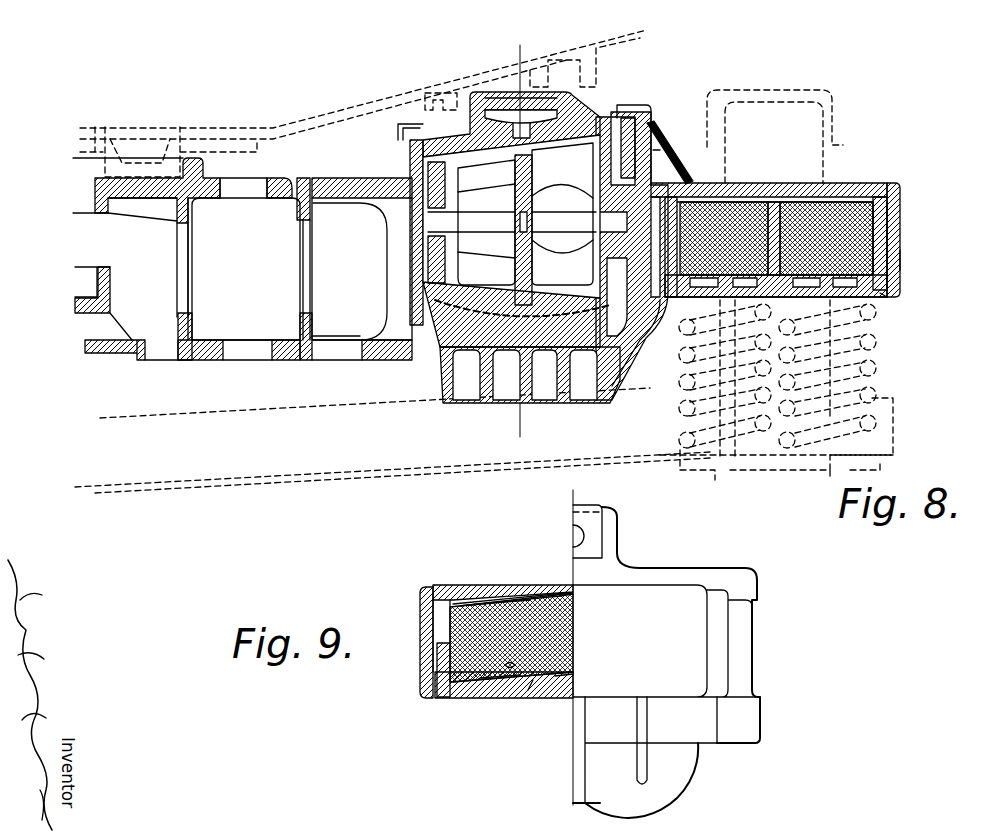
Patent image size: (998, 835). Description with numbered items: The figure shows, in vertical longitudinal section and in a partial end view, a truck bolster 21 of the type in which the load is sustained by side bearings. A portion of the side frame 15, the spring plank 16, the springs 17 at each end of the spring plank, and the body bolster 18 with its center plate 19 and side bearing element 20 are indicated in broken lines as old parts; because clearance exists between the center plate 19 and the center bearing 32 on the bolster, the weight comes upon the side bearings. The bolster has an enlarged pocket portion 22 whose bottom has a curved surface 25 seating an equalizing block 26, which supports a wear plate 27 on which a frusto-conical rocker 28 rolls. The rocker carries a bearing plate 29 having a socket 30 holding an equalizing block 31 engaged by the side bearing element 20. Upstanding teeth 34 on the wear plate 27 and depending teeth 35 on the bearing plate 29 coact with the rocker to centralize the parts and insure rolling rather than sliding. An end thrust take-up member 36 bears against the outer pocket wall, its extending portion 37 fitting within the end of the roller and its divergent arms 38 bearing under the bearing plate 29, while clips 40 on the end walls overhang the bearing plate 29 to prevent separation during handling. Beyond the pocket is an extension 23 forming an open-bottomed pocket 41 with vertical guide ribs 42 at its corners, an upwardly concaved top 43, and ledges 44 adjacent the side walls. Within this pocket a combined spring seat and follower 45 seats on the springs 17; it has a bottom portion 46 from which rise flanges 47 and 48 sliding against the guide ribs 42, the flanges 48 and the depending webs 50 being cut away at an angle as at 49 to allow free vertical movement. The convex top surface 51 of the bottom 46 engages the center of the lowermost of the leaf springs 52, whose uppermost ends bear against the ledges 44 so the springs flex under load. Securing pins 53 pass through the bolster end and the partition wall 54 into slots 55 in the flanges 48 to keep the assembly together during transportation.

In FIG. 8, the side frame 15 is at (830, 88).
In FIG. 8, the spring plank 16 is at (265, 490).
In FIG. 8, the springs 17 is at (890, 368).
In FIG. 8, the body bolster 18 is at (331, 127).
In FIG. 8, the center plate 19 is at (140, 150).
In FIG. 8, the side bearing element 20 is at (540, 65).
In FIG. 8, the bolster 21 is at (278, 198).
In FIG. 9, the bolster 21 is at (693, 767).
In FIG. 8, the pocket portion 22 is at (388, 310).
In FIG. 8, the extension 23 is at (885, 183).
In FIG. 9, the extension 23 is at (666, 624).
In FIG. 8, the curved surface 25 is at (521, 342).
In FIG. 8, the equalizing block 26 is at (560, 300).
In FIG. 8, the wear plate 27 is at (478, 290).
In FIG. 8, the frusto-conical rocker 28 is at (565, 163).
In FIG. 8, the bearing plate 29 is at (592, 125).
In FIG. 8, the socket 30 is at (521, 122).
In FIG. 8, the equalizing block 31 is at (500, 98).
In FIG. 8, the center bearing 32 is at (210, 172).
In FIG. 8, the upstanding teeth 34 is at (410, 274).
In FIG. 8, the depending teeth 35 is at (420, 167).
In FIG. 8, the end thrust take-up member 36 is at (653, 182).
In FIG. 8, the extending portion 37 is at (670, 190).
In FIG. 8, the divergent arms 38 is at (653, 150).
In FIG. 8, the clips 40 is at (655, 108).
In FIG. 8, the pocket 41 is at (838, 197).
In FIG. 8, the vertical guide ribs 42 is at (905, 186).
In FIG. 9, the vertical guide ribs 42 is at (420, 603).
In FIG. 8, the upwardly concaved top 43 is at (800, 197).
In FIG. 9, the upwardly concaved top 43 is at (563, 600).
In FIG. 9, the ledges 44 is at (455, 597).
In FIG. 8, the combined spring seat and follower 45 is at (886, 304).
In FIG. 9, the combined spring seat and follower 45 is at (537, 708).
In FIG. 8, the bottom portion 46 is at (903, 290).
In FIG. 9, the bottom portion 46 is at (462, 702).
In FIG. 9, the flange 47 is at (447, 672).
In FIG. 8, the flanges 48 is at (900, 212).
In FIG. 9, the angular cut-away 49 is at (527, 600).
In FIG. 9, the depending webs 50 is at (503, 602).
In FIG. 9, the top surface 51 is at (583, 663).
In FIG. 8, the leaf springs 52 is at (895, 230).
In FIG. 9, the leaf springs 52 is at (578, 647).
In FIG. 8, the securing pins 53 is at (903, 267).
In FIG. 9, the securing pins 53 is at (510, 683).
In FIG. 8, the partition wall 54 is at (592, 243).
In FIG. 8, the slots 55 is at (900, 250).
In FIG. 9, the slots 55 is at (507, 703).